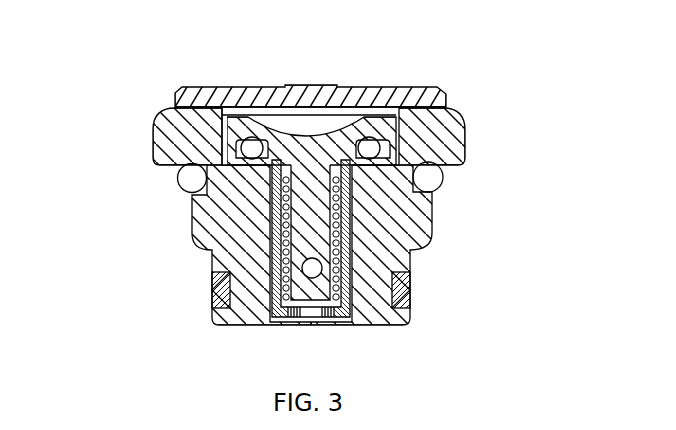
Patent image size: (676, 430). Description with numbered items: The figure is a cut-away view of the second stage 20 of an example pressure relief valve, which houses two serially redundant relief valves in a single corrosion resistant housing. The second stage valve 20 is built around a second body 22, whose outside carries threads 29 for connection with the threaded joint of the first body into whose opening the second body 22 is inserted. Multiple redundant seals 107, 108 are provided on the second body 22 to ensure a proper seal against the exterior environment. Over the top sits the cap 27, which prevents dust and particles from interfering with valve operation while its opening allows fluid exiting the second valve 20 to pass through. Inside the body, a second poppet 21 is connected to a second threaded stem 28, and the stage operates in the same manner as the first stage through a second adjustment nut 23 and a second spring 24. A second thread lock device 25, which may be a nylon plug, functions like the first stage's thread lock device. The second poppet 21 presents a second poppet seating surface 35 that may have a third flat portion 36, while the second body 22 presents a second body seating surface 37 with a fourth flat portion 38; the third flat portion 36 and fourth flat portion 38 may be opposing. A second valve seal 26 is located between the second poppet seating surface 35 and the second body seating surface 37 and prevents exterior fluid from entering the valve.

The second stage valve 20 is at (98, 176).
The second poppet 21 is at (222, 137).
The second body 22 is at (465, 142).
The second adjustment nut 23 is at (311, 320).
The second spring 24 is at (233, 226).
The second thread lock device 25 is at (353, 271).
The second valve seal 26 is at (372, 160).
The cap 27 is at (413, 87).
The second threaded stem 28 is at (272, 206).
The threads 29 is at (432, 223).
The second poppet seating surface 35 is at (277, 138).
The third flat portion 36 is at (350, 128).
The second body seating surface 37 is at (284, 177).
The fourth flat portion 38 is at (341, 197).
The redundant seal 107 is at (410, 290).
The redundant seal 108 is at (436, 186).